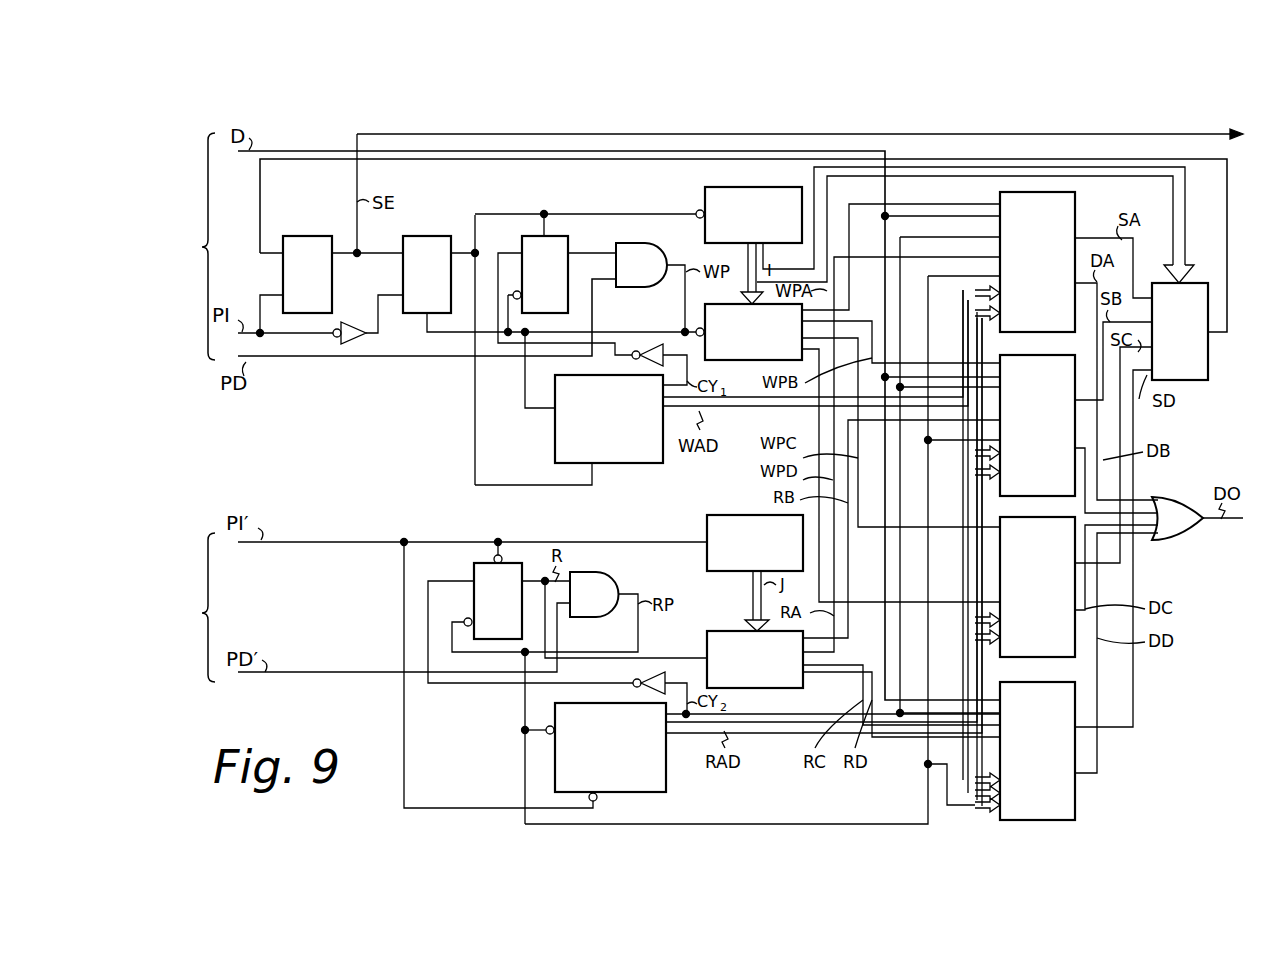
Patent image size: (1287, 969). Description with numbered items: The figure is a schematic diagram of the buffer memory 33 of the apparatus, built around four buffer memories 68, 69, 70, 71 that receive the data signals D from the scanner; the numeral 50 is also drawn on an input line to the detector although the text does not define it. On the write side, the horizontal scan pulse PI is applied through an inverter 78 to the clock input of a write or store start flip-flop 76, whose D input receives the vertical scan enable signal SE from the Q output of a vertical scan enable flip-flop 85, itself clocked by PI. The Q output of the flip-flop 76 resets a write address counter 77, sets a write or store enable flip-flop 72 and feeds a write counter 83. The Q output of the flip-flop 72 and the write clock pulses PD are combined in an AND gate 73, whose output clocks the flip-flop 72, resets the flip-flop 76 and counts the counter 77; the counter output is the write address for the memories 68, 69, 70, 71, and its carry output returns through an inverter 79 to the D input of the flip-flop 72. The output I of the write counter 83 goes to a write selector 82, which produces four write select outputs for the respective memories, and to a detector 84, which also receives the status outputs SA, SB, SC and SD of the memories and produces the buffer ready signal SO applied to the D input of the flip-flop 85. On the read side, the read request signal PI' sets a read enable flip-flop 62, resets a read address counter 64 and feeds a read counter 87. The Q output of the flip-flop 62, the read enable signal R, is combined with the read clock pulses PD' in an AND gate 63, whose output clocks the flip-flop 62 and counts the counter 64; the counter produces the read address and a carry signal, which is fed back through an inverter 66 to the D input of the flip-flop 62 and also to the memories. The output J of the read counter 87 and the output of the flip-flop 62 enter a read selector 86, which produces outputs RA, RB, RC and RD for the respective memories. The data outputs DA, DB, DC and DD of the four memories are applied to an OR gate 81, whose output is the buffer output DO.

The memory 33 is at (742, 128).
The input line to detector 50 is at (1227, 268).
The vertical scan enable flip-flop 85 is at (304, 237).
The write or store start flip-flop 76 is at (429, 237).
The inverter 78 is at (357, 345).
The write or store enable flip-flop 72 is at (529, 228).
The AND gate 73 is at (642, 243).
The inverter 79 is at (642, 344).
The write counter 83 is at (702, 189).
The write selector 82 is at (758, 361).
The write address counter 77 is at (627, 463).
The buffer memory 68 is at (1080, 196).
The buffer memory 69 is at (1080, 350).
The buffer memory 70 is at (1062, 517).
The buffer memory 71 is at (1076, 796).
The detector 84 is at (1208, 371).
The OR gate 81 is at (1181, 544).
The read enable flip-flop 62 is at (478, 562).
The AND gate 63 is at (590, 571).
The inverter 66 is at (650, 672).
The read counter 87 is at (734, 520).
The read selector 86 is at (715, 632).
The read address counter 64 is at (648, 792).